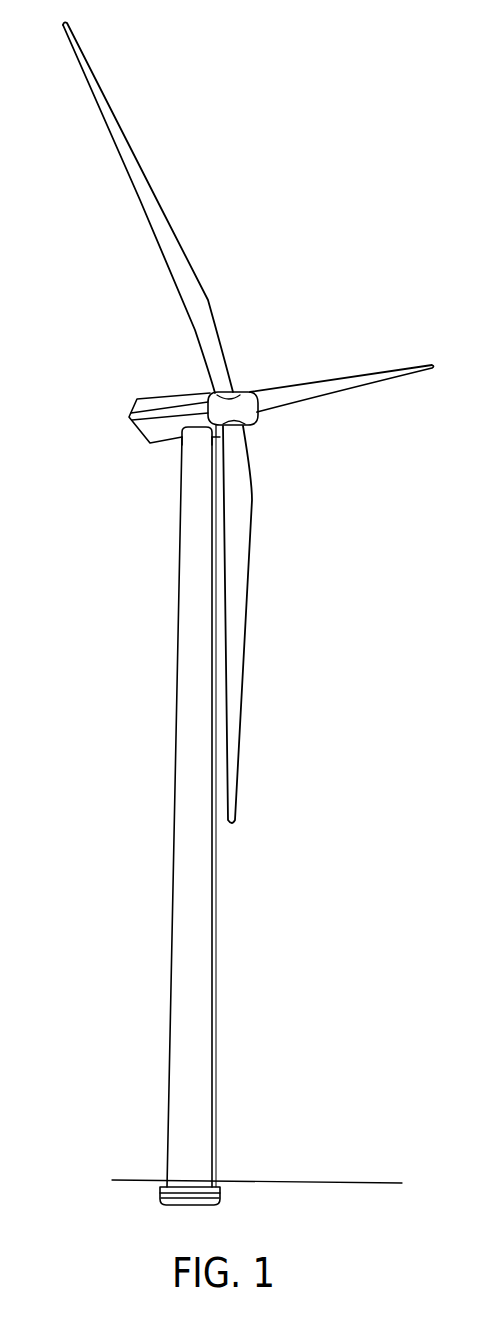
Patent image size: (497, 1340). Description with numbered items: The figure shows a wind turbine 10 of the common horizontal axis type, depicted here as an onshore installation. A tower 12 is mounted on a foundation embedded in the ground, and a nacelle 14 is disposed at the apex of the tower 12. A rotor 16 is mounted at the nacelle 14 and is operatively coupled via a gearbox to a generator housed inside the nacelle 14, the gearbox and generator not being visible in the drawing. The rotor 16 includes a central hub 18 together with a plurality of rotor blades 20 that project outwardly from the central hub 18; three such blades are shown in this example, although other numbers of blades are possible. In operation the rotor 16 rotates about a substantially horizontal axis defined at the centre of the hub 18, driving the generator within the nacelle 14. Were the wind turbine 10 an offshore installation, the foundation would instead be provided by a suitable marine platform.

The wind turbine 10 is at (374, 199).
The tower 12 is at (173, 873).
The nacelle 14 is at (152, 396).
The rotor 16 is at (243, 391).
The central hub 18 is at (252, 413).
The rotor blades 20 is at (109, 134).